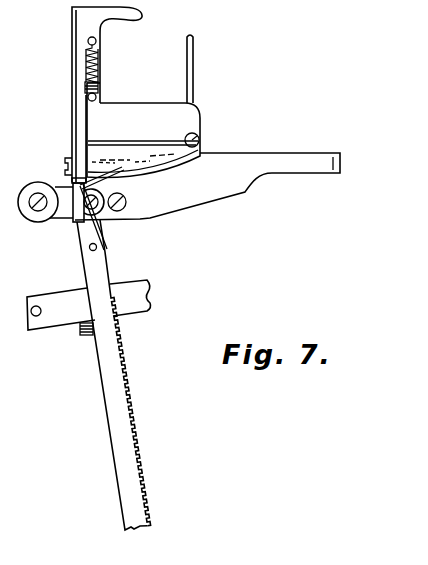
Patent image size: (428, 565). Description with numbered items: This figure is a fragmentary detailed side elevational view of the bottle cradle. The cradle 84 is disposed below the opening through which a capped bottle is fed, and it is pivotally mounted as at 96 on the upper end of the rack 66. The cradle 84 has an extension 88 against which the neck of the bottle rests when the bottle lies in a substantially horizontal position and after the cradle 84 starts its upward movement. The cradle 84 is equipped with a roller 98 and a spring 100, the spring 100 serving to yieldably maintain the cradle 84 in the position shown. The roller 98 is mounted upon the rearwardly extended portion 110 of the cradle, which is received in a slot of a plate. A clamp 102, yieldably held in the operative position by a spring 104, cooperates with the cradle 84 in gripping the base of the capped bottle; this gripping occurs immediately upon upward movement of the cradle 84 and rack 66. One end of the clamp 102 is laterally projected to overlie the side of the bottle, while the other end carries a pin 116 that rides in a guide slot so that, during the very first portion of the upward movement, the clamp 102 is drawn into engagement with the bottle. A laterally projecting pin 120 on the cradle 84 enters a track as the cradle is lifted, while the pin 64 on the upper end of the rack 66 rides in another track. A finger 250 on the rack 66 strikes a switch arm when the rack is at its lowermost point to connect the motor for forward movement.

The clamp 102 is at (78, 17).
The spring 104 is at (99, 63).
The cradle 84 is at (201, 113).
The laterally projecting pin 120 is at (198, 138).
The extension 88 is at (290, 163).
The pin 116 is at (70, 158).
The roller 98 is at (36, 183).
The rearwardly extended portion 110 is at (57, 218).
The pivot 96 is at (77, 227).
The spring 100 is at (103, 222).
The finger 250 is at (150, 286).
The pin 64 is at (35, 317).
The rack 66 is at (108, 406).